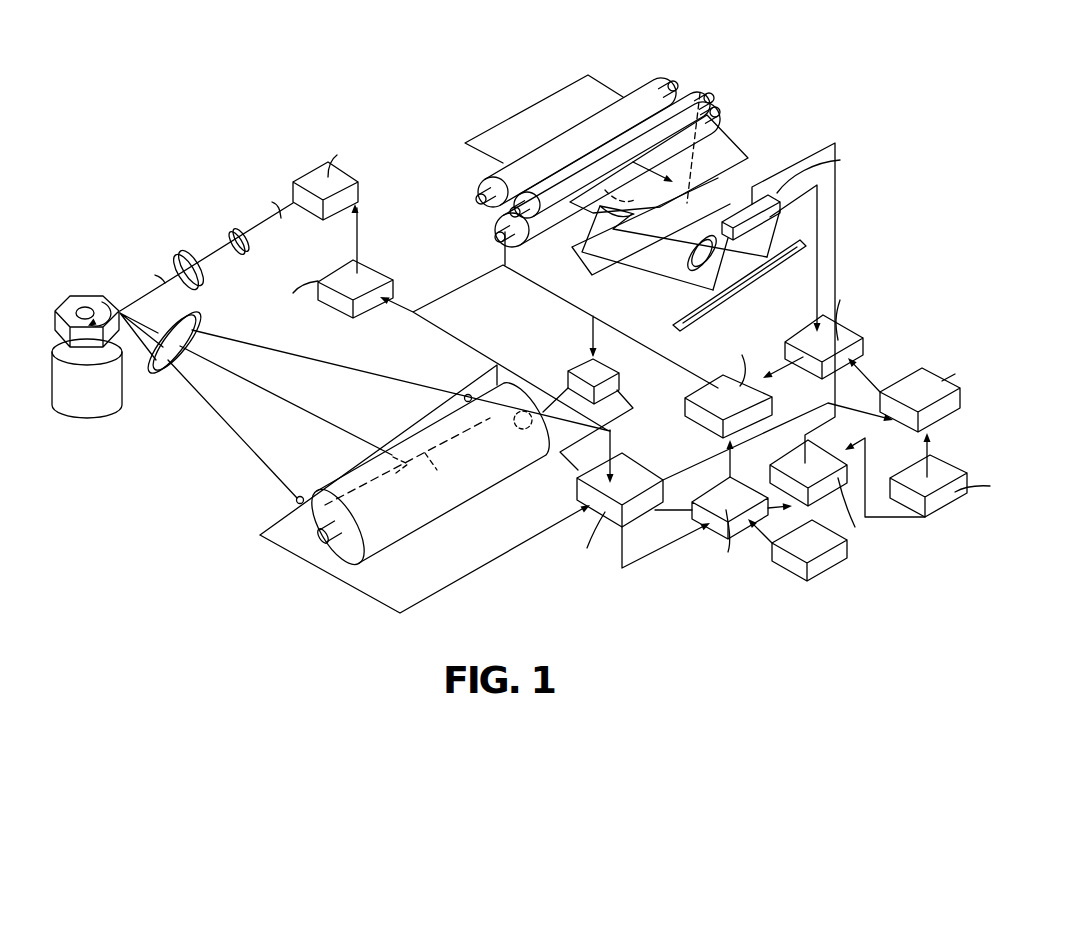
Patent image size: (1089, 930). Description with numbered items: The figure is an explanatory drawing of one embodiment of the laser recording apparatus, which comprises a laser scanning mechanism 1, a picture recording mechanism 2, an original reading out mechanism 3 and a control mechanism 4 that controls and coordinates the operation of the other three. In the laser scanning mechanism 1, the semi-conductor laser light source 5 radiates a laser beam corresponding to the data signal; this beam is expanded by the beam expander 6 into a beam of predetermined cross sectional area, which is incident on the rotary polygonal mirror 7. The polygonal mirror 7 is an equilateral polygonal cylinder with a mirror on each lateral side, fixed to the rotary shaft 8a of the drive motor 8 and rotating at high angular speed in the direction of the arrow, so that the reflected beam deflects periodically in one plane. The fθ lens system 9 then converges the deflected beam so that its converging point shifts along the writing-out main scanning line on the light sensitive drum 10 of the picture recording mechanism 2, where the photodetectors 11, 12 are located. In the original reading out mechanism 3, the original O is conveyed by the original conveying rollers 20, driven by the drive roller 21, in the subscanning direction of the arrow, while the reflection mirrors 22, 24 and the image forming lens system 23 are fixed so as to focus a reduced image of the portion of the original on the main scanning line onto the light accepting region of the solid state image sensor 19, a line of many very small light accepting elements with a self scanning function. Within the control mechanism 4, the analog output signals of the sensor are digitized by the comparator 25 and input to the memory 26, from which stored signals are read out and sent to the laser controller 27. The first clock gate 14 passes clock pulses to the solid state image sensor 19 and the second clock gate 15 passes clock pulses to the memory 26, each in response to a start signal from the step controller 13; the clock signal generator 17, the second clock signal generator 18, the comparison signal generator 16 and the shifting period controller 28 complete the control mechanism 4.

The laser scanning mechanism 1 is at (212, 170).
The picture recording mechanism 2 is at (270, 552).
The original reading out mechanism 3 is at (799, 104).
The control mechanism 4 is at (965, 248).
The semi-conductor laser light source 5 is at (352, 193).
The beam expander 6 is at (258, 253).
The polygonal mirror 7 is at (62, 312).
The drive motor 8 is at (75, 407).
The rotary shaft 8a is at (85, 306).
The fθ lens system 9 is at (192, 325).
The light sensitive drum 10 is at (383, 538).
The photodetector 11 is at (467, 395).
The photodetector 12 is at (296, 500).
The step controller 13 is at (577, 490).
The first clock gate 14 is at (830, 483).
The second clock gate 15 is at (714, 493).
The comparison signal generator 16 is at (952, 404).
The clock signal generator 17 is at (952, 468).
The second clock signal generator 18 is at (822, 567).
The solid state image sensor 19 is at (773, 213).
The original conveying rollers 20 is at (707, 128).
The drive roller 21 is at (552, 232).
The reflection mirror 22 is at (608, 260).
The image forming lens system 23 is at (693, 263).
The reflection mirror 24 is at (730, 290).
The comparator 25 is at (845, 337).
The memory 26 is at (731, 388).
The laser controller 27 is at (375, 270).
The shifting period controller 28 is at (567, 369).
The original O is at (733, 155).